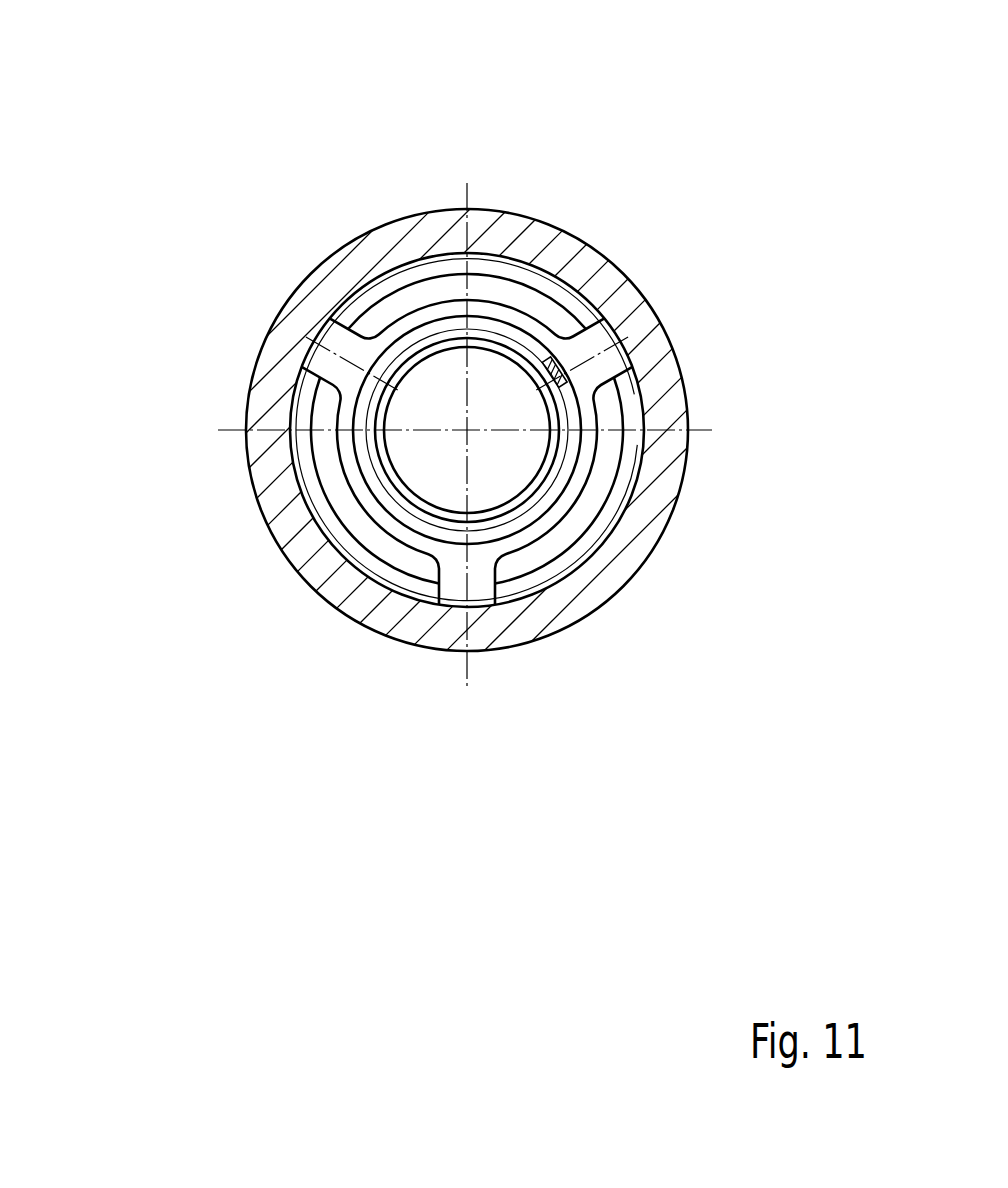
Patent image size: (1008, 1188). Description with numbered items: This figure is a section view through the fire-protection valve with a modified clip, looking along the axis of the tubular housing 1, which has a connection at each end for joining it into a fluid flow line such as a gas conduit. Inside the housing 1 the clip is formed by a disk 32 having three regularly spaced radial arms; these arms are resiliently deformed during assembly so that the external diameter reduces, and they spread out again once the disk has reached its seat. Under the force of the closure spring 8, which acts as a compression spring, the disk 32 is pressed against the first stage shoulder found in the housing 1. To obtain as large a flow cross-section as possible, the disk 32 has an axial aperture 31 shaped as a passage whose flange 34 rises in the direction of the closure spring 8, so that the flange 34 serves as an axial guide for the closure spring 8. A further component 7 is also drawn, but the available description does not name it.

The tubular housing 1 is at (283, 467).
The ring 7 is at (526, 258).
The closure spring 8 is at (572, 437).
The axial aperture 31 is at (443, 470).
The disk 32 is at (437, 310).
The flange 34 is at (415, 355).